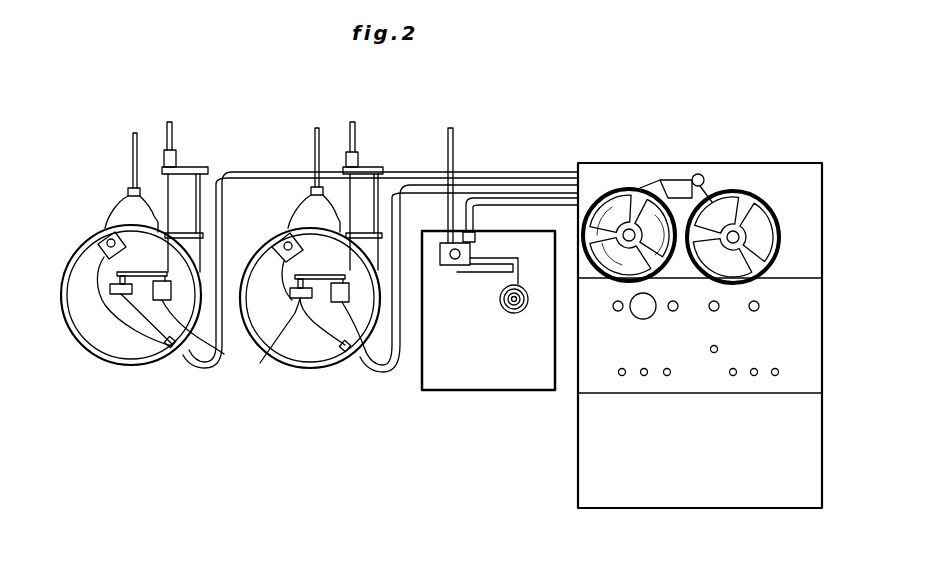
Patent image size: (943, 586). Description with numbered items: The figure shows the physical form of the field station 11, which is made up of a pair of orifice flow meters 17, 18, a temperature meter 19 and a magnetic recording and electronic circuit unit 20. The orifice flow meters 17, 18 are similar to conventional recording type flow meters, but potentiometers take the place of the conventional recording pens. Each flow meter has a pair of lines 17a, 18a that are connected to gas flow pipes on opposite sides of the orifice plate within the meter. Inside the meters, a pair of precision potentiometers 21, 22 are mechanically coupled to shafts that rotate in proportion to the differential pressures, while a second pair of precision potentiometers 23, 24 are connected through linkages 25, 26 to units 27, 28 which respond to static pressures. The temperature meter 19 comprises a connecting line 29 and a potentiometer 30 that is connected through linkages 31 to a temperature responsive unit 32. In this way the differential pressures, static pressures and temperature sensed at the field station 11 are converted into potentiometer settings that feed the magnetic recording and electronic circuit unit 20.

The field station 11 is at (201, 401).
The orifice flow meter 17 is at (150, 366).
The pair of lines 17a is at (141, 140).
The orifice flow meter 18 is at (326, 368).
The pair of lines 18a is at (322, 140).
The temperature meter 19 is at (493, 380).
The magnetic recording and electronic circuit unit 20 is at (578, 410).
The precision potentiometer 21 is at (100, 243).
The precision potentiometer 22 is at (278, 251).
The precision potentiometer 23 is at (110, 289).
The precision potentiometer 24 is at (262, 365).
The linkage 25 is at (168, 254).
The linkage 26 is at (341, 258).
The static pressure responsive unit 27 is at (199, 357).
The static pressure responsive unit 28 is at (368, 362).
The connecting line 29 is at (453, 160).
The potentiometer 30 is at (451, 268).
The linkages 31 is at (499, 263).
The temperature responsive unit 32 is at (527, 308).